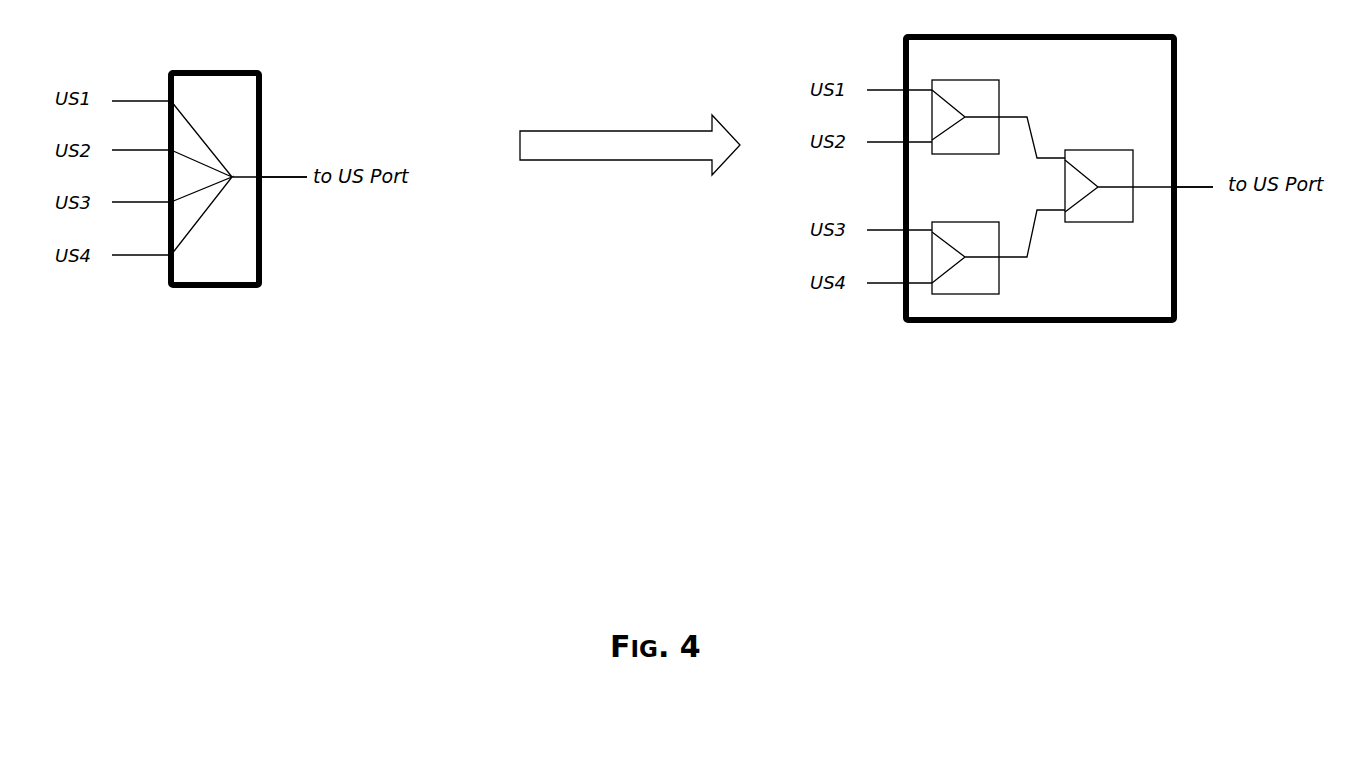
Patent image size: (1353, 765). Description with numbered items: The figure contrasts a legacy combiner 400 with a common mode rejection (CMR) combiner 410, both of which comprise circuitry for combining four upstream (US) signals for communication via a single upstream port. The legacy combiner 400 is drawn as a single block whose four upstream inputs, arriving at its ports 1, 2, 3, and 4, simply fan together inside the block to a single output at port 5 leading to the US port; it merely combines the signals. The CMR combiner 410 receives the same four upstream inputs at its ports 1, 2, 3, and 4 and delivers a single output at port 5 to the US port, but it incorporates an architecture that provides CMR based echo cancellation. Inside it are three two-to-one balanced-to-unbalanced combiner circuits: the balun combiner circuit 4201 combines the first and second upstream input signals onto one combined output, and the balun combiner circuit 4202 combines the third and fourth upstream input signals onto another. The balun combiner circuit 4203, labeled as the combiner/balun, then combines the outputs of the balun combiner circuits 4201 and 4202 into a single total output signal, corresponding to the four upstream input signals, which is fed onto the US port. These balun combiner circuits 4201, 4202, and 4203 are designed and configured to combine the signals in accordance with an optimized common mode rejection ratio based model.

The legacy combiner 400 is at (237, 405).
The common mode rejection (CMR) combiner 410 is at (1059, 221).
The balun combiner circuit 4201 is at (977, 154).
The balun combiner circuit 4202 is at (999, 272).
The balun combiner circuit 4203 is at (1103, 222).
The port 1 (US1) 1 is at (522, 84).
The port 2 (US2) 2 is at (522, 136).
The port 3 (US3) 3 is at (522, 207).
The port 4 (US4) 4 is at (522, 256).
The port 5 (to US port) 5 is at (736, 171).